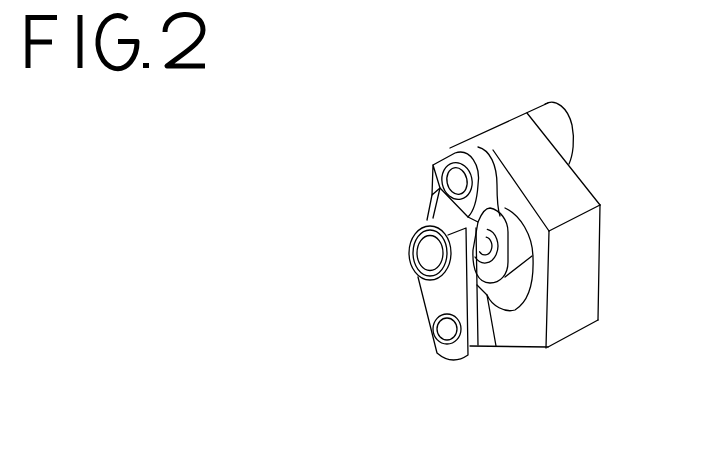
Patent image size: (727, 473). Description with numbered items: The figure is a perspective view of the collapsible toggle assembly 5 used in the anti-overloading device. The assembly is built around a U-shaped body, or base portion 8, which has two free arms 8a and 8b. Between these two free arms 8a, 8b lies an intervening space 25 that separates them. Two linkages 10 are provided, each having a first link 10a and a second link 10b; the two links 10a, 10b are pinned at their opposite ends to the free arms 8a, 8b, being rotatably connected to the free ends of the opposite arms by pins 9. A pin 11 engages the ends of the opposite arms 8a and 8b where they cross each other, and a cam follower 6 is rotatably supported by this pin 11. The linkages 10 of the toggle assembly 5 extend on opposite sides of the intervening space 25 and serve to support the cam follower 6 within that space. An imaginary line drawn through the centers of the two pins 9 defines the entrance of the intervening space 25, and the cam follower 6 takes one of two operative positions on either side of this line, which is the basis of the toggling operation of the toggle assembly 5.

The collapsible toggle assembly 5 is at (577, 352).
The cam follower 6 is at (512, 250).
The base portion 8 is at (588, 233).
The free arm 8a is at (510, 333).
The free arm 8b is at (540, 167).
The pin 9 is at (457, 182).
The linkage 10 is at (414, 297).
The first link 10a is at (437, 302).
The second link 10b is at (435, 165).
The pin 11 is at (428, 255).
The intervening space 25 is at (508, 303).